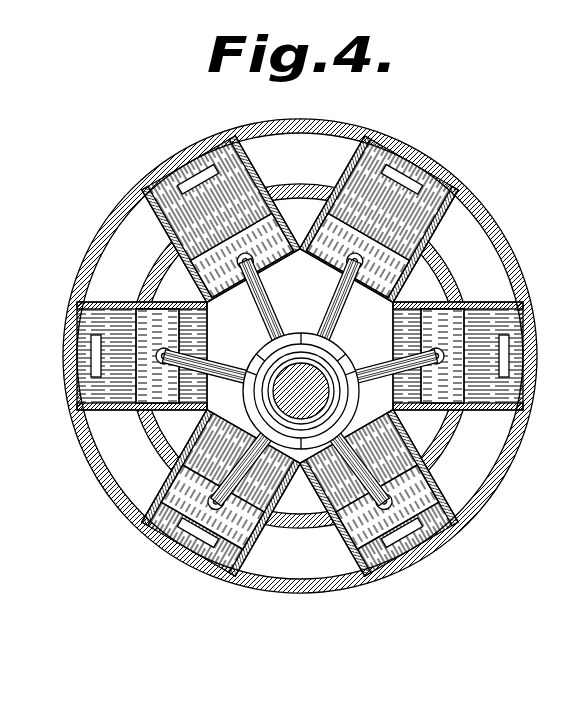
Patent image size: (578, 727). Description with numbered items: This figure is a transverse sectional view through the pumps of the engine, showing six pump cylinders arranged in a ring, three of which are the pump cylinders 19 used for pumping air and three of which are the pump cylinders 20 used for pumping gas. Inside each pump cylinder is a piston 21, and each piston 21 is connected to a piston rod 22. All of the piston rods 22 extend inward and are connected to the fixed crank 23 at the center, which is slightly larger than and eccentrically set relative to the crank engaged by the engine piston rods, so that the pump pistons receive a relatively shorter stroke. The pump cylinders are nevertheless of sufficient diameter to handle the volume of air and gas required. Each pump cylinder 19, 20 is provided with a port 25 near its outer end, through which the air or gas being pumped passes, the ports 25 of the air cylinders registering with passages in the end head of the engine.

The pump cylinder 19 is at (218, 142).
The pump cylinder 20 is at (427, 208).
The piston 21 is at (244, 240).
The piston rod 22 is at (243, 322).
The fixed crank 23 is at (313, 377).
The port 25 is at (186, 181).